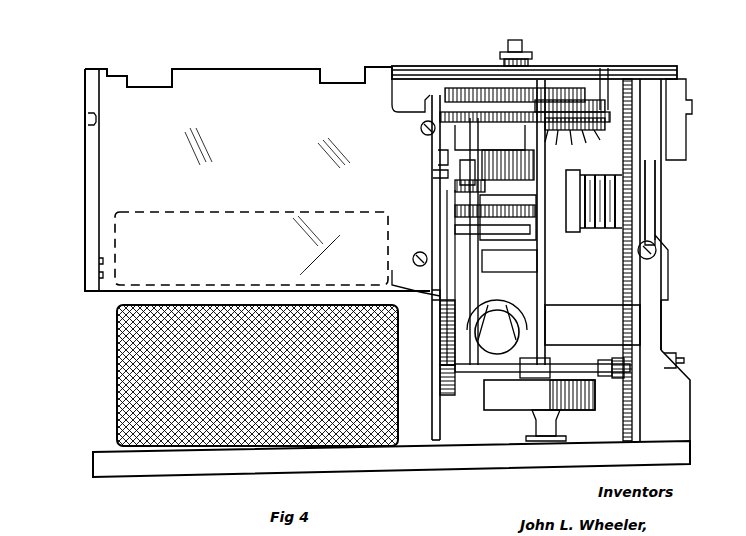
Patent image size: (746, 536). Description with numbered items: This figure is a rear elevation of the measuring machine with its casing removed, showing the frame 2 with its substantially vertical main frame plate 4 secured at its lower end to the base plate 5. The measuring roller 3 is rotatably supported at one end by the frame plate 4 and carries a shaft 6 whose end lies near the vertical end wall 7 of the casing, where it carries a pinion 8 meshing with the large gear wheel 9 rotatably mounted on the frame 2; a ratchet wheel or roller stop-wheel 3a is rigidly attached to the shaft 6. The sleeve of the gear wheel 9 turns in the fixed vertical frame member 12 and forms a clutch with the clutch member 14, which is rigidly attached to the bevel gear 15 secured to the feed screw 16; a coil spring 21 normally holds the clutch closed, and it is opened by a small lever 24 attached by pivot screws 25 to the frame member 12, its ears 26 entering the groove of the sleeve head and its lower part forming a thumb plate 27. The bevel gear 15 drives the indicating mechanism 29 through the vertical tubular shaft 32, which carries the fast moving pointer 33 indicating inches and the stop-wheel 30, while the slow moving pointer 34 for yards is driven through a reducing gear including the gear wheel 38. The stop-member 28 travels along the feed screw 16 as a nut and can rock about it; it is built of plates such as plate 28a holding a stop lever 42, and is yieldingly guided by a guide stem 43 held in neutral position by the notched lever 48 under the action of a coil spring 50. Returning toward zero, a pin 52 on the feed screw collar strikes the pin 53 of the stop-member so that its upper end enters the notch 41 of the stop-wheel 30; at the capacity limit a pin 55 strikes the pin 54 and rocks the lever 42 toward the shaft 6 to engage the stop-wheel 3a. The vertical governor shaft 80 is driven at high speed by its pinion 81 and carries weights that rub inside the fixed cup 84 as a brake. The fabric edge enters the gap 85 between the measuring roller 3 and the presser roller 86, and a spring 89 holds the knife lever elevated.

The frame 2 is at (85, 196).
The measuring roller 3 is at (117, 352).
The ratchet wheel or roller stop-wheel 3a is at (528, 416).
The main frame plate 4 is at (440, 425).
The base plate 5 is at (527, 466).
The shaft 6 is at (603, 376).
The vertical end wall 7 is at (432, 297).
The pinion 8 is at (620, 378).
The large gear wheel 9 is at (640, 140).
The fixed vertical frame member 12 is at (652, 322).
The clutch member 14 is at (573, 175).
The bevel gear 15 is at (548, 200).
The feed screw 16 is at (420, 220).
The coil spring 21 is at (615, 232).
The lever 24 is at (668, 260).
The pivot screws 25 is at (655, 255).
The ears 26 is at (660, 235).
The thumb plate 27 is at (690, 358).
The stop-member 28 is at (470, 214).
The plate 28a is at (509, 265).
The indicating mechanism 29 is at (560, 92).
The stop-wheel 30 is at (630, 112).
The vertical tubular shaft 32 is at (435, 152).
The fast moving pointer or hand 33 is at (523, 45).
The slow moving pointer 34 is at (516, 52).
The gear wheel 38 is at (420, 128).
The notch 41 is at (505, 110).
The stop lever 42 is at (460, 170).
The guide stem 43 is at (499, 315).
The lever 48 is at (392, 270).
The coil spring 50 is at (440, 336).
The projecting pin 52 is at (540, 170).
The pin 53 is at (490, 230).
The pin 54 is at (455, 230).
The pin 55 is at (455, 186).
The vertical governor shaft 80 is at (548, 300).
The pinion 81 is at (572, 134).
The fixed cup 84 is at (542, 384).
The gap 85 is at (298, 300).
The presser roller 86 is at (222, 213).
The spring 89 is at (604, 88).